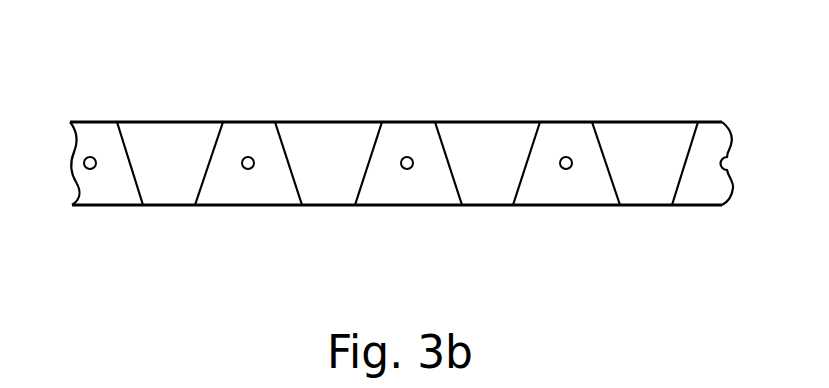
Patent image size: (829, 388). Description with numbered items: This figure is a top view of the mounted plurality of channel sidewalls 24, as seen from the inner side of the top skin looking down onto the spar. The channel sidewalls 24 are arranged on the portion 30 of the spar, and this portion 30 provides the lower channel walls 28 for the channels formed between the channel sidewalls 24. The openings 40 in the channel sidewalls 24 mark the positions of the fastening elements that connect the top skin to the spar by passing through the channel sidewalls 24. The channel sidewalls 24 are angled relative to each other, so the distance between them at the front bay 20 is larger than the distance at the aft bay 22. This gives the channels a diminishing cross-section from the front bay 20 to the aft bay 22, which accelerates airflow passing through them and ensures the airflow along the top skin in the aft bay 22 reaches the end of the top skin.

The front bay 20 is at (179, 118).
The aft bay 22 is at (122, 208).
The channel sidewalls 24 is at (101, 185).
The lower channel walls 28 is at (652, 142).
The portion 30 is at (500, 122).
The openings 40 is at (248, 157).